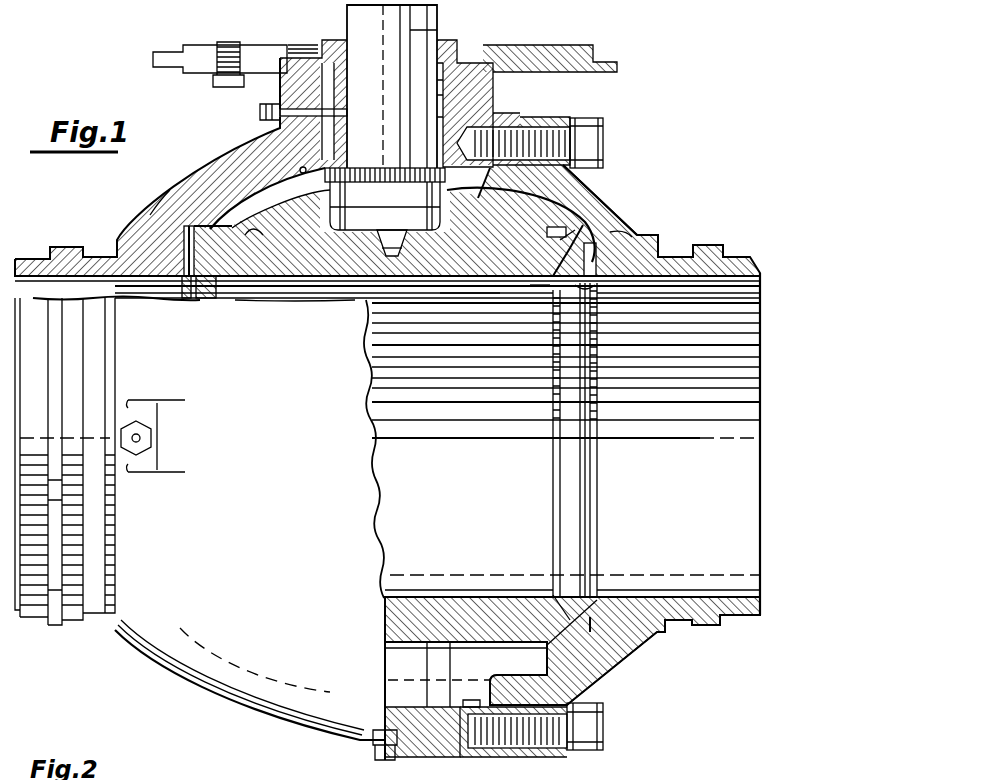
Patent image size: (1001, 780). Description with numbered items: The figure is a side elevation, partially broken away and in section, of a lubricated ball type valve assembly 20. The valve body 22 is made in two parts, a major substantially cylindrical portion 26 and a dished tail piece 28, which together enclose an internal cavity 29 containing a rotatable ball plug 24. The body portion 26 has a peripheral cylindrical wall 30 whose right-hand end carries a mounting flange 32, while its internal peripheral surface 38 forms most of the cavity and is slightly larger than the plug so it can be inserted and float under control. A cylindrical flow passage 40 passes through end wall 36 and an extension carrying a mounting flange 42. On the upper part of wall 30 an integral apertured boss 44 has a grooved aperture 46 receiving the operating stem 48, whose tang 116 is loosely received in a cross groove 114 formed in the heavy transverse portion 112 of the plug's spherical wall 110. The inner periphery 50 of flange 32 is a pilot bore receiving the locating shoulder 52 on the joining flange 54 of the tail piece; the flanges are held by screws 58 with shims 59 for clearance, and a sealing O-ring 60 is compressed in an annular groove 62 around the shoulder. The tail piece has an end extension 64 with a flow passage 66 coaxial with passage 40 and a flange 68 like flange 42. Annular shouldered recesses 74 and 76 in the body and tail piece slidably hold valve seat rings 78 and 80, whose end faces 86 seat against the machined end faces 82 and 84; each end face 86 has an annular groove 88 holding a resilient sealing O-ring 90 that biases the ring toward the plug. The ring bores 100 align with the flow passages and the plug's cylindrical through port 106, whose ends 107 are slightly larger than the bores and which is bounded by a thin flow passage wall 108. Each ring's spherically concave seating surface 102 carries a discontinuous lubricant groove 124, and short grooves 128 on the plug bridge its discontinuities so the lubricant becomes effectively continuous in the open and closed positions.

The valve assembly 20 is at (203, 156).
The valve body 22 is at (234, 710).
The ball plug 24 is at (361, 280).
The major cylindrical portion 26 is at (248, 160).
The tail piece 28 is at (601, 200).
The internal cavity 29 is at (248, 203).
The cylindrical wall 30 is at (400, 740).
The mounting flange 32 is at (462, 752).
The end wall 36 is at (165, 220).
The internal peripheral surface 38 is at (303, 170).
The flow passage 40 is at (155, 300).
The mounting flange 42 is at (72, 250).
The apertured boss 44 is at (493, 72).
The aperture 46 is at (442, 100).
The operating stem 48 is at (345, 22).
The inner periphery 50 is at (512, 678).
The locating shoulder 52 is at (475, 700).
The joining flange 54 is at (552, 120).
The screws 58 is at (588, 120).
The shims 59 is at (522, 120).
The sealing O-ring 60 is at (502, 195).
The annular groove 62 is at (508, 175).
The end extension 64 is at (666, 250).
The flow passage 66 is at (762, 280).
The flange 68 is at (710, 245).
The annular shouldered recess 74 is at (182, 236).
The annular shouldered recess 76 is at (590, 235).
The valve seat ring 78 is at (222, 242).
The valve seat ring 80 is at (560, 250).
The end face 82 is at (180, 263).
The end face 84 is at (597, 258).
The end face 86 is at (622, 242).
The annular groove 88 is at (553, 288).
The sealing O-ring 90 is at (588, 285).
The bore 100 is at (222, 300).
The seating surface 102 is at (548, 285).
The through port 106 is at (203, 298).
The port ends 107 is at (572, 503).
The flow passage wall 108 is at (500, 290).
The spherical wall 110 is at (255, 230).
The heavy transverse portion 112 is at (305, 196).
The cross groove 114 is at (418, 233).
The tang 116 is at (352, 222).
The lubricant groove 124 is at (568, 229).
The short grooves 128 is at (550, 593).